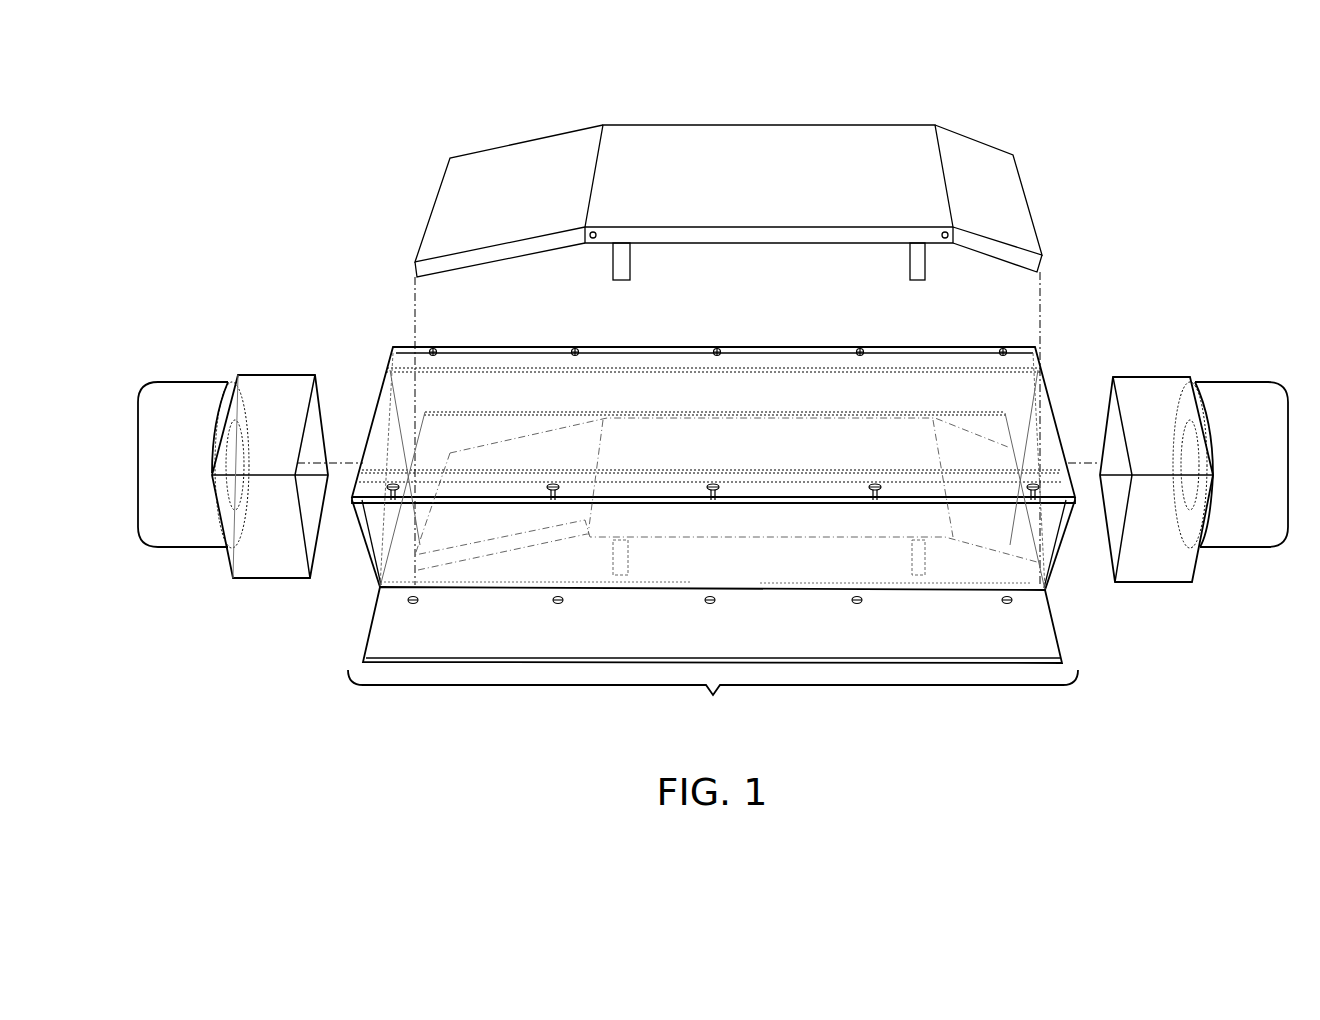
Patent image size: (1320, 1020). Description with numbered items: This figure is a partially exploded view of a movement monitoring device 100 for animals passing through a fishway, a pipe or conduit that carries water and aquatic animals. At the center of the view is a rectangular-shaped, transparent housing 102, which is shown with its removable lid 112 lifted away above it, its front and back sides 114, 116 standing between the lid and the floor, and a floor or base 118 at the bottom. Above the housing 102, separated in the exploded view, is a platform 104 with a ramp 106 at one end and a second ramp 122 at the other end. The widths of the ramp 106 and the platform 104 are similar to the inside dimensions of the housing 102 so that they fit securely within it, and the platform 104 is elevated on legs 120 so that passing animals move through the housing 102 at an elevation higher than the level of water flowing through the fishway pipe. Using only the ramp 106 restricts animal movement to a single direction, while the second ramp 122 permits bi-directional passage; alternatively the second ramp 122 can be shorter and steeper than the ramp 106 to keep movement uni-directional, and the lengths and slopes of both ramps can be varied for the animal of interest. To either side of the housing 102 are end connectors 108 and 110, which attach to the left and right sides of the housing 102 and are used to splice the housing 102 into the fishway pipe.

The movement monitoring device 100 is at (201, 134).
The housing 102 is at (713, 696).
The platform 104 is at (808, 135).
The ramp 106 is at (520, 158).
The end connector 108 is at (186, 395).
The end connector 110 is at (1233, 395).
The removable lid 112 is at (514, 347).
The front side 114 is at (372, 552).
The back side 116 is at (1035, 400).
The floor or base 118 is at (1055, 628).
The legs 120 is at (622, 262).
The second ramp 122 is at (1013, 203).